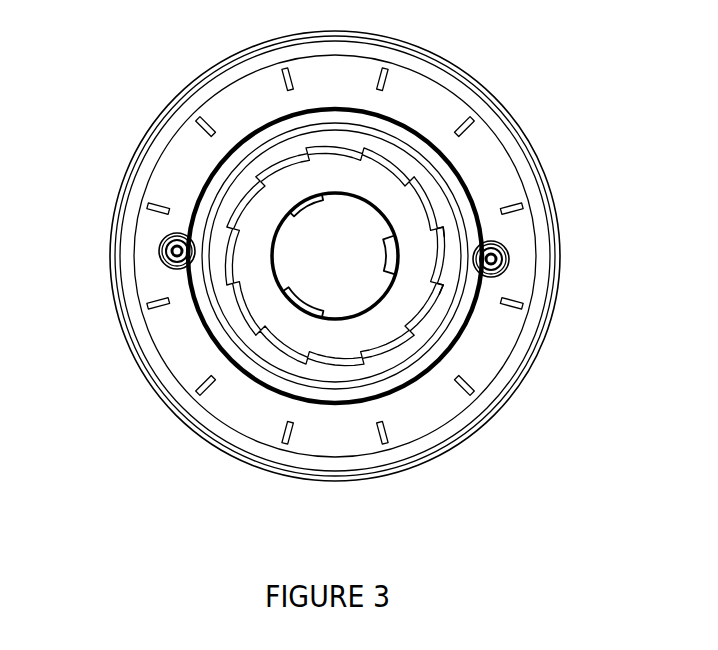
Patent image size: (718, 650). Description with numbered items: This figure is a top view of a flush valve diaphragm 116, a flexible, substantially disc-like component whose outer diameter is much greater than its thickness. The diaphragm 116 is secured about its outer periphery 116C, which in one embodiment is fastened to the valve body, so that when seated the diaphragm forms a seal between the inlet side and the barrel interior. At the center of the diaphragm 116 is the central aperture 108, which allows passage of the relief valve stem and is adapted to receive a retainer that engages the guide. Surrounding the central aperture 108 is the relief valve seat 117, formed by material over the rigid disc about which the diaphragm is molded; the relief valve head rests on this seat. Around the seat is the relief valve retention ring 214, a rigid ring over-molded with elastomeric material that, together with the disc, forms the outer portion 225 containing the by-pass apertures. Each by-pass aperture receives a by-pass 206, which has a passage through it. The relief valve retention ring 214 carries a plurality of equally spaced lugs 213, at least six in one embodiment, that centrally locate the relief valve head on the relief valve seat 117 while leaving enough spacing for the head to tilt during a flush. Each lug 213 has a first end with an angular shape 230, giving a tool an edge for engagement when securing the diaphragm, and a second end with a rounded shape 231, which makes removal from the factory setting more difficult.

The central aperture 108 is at (330, 227).
The diaphragm 116 is at (483, 350).
The outer periphery 116C is at (490, 418).
The relief valve seat 117 is at (253, 212).
The by-pass 206 is at (163, 258).
The lugs 213 is at (393, 163).
The relief valve retention ring 214 is at (395, 142).
The outer portion 225 is at (483, 233).
The angular shape 230 is at (437, 289).
The rounded shape 231 is at (437, 240).